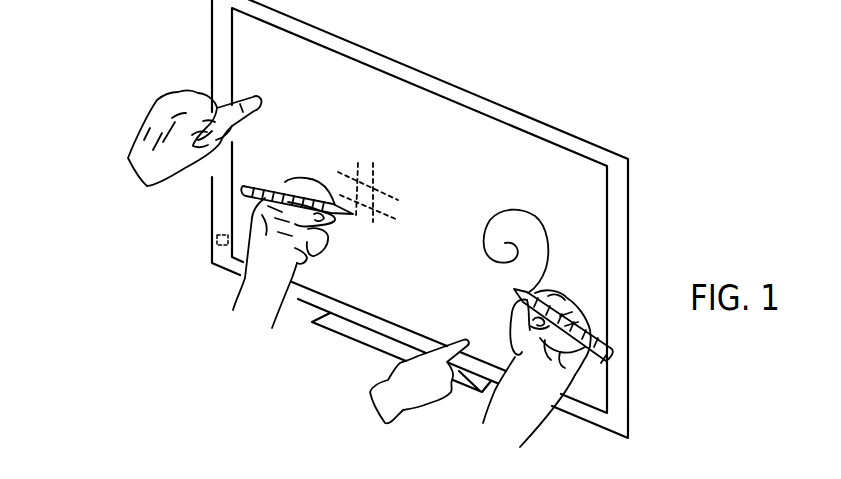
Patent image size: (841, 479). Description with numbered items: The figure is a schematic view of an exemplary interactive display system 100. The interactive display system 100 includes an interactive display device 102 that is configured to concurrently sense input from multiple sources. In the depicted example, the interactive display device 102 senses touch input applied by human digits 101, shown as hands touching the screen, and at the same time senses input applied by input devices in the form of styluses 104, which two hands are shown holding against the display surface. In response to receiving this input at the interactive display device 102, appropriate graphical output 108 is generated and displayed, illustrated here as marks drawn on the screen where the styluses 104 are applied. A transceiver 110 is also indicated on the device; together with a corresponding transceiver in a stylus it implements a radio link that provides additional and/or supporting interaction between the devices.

The interactive display system 100 is at (420, 219).
The human digits 101 is at (262, 108).
The interactive display device 102 is at (280, 66).
The styluses 104 is at (259, 184).
The graphical output 108 is at (462, 278).
The transceiver 110 is at (215, 240).